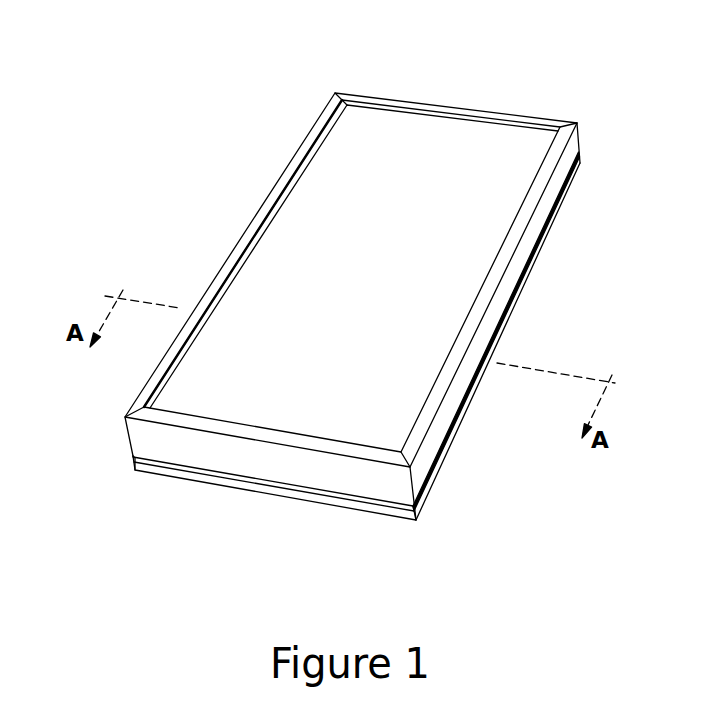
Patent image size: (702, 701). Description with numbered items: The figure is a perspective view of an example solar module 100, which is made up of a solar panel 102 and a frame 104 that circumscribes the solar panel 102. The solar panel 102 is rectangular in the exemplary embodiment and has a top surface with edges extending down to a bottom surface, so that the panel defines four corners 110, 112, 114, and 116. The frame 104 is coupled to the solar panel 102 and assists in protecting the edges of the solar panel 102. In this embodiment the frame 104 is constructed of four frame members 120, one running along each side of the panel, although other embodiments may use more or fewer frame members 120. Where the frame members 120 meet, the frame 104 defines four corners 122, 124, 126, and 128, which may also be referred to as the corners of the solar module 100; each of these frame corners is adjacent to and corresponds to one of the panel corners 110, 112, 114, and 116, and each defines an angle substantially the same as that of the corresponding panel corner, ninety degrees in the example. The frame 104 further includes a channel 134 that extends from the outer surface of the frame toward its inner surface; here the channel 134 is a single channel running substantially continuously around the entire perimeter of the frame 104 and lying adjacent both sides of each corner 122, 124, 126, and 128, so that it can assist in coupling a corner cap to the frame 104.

The solar module 100 is at (258, 67).
The solar panel 102 is at (473, 136).
The frame 104 is at (540, 262).
The corner 110 is at (123, 417).
The corner 112 is at (401, 452).
The corner 114 is at (342, 93).
The corner 116 is at (564, 121).
The frame member 120 is at (434, 104).
The corner 122 is at (133, 463).
The corner 124 is at (422, 487).
The corner 126 is at (333, 95).
The corner 128 is at (582, 166).
The channel 134 is at (522, 319).